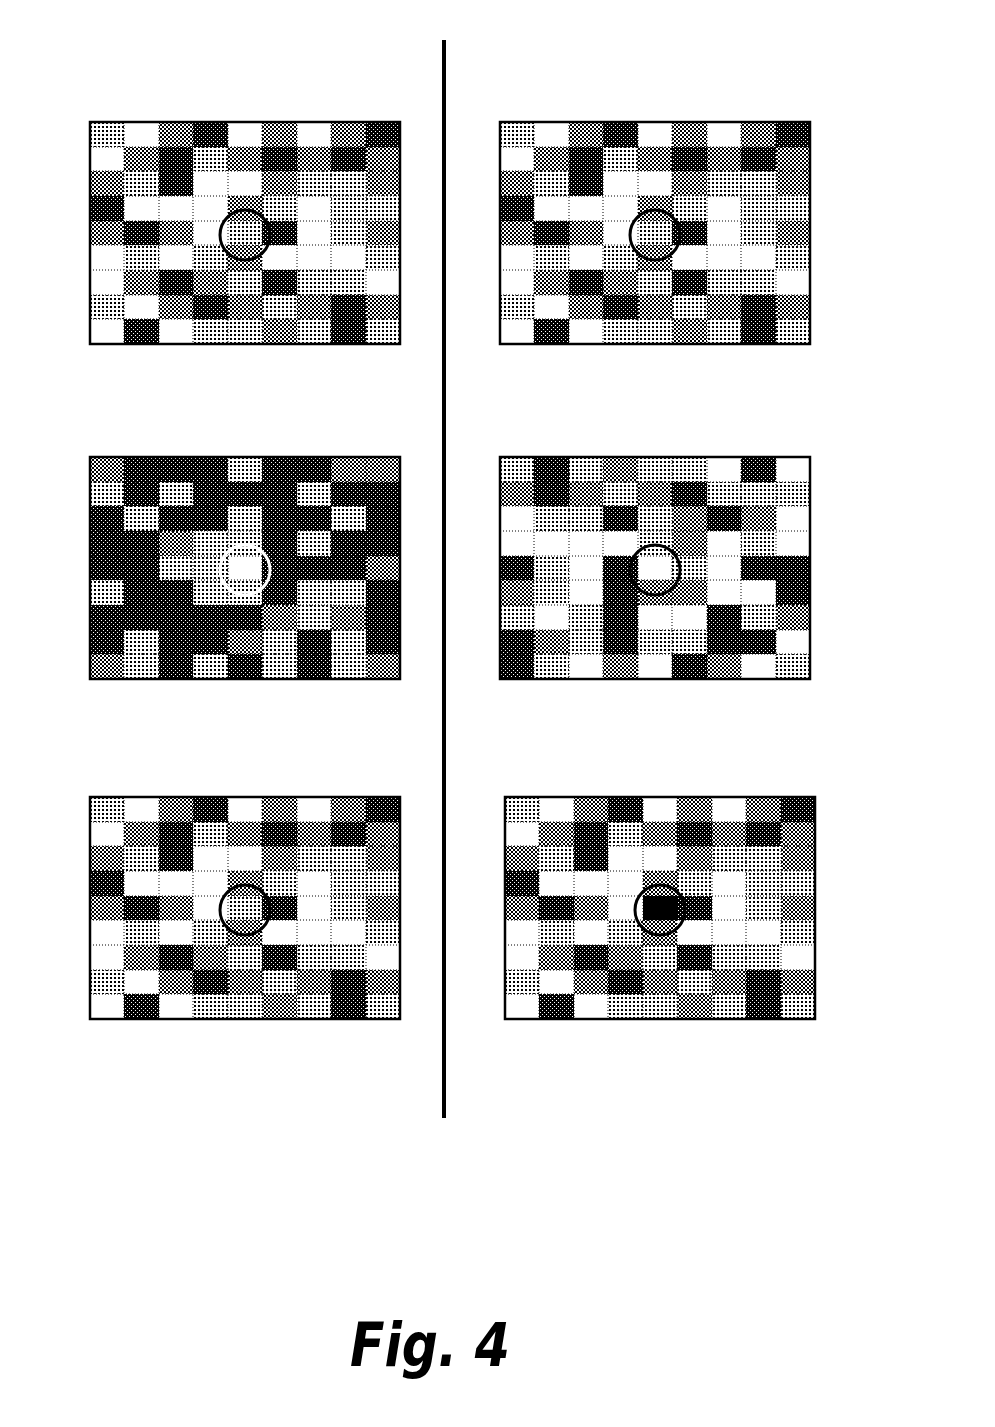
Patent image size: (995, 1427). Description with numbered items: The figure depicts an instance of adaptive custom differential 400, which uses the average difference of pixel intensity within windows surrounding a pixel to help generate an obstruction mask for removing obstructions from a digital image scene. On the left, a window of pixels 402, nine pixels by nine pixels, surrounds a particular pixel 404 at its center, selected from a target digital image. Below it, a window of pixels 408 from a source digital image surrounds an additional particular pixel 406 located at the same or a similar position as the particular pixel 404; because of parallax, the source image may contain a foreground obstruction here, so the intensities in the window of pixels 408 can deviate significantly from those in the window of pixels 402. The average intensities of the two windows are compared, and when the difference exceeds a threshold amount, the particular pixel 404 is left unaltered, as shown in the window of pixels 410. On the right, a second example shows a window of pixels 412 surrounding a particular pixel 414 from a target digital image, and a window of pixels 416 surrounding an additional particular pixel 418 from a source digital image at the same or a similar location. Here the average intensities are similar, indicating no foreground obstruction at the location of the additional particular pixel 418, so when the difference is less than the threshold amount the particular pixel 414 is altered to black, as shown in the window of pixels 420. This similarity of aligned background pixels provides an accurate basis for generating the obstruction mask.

The adaptive custom differential 400 is at (355, 72).
The window of pixels 402 is at (121, 108).
The particular pixel 404 is at (259, 210).
The additional particular pixel 406 is at (224, 583).
The window of pixels 408 is at (121, 443).
The window of pixels 410 is at (124, 788).
The window of pixels 412 is at (781, 108).
The particular pixel 414 is at (669, 210).
The window of pixels 416 is at (784, 448).
The additional particular pixel 418 is at (669, 545).
The window of pixels 420 is at (786, 788).